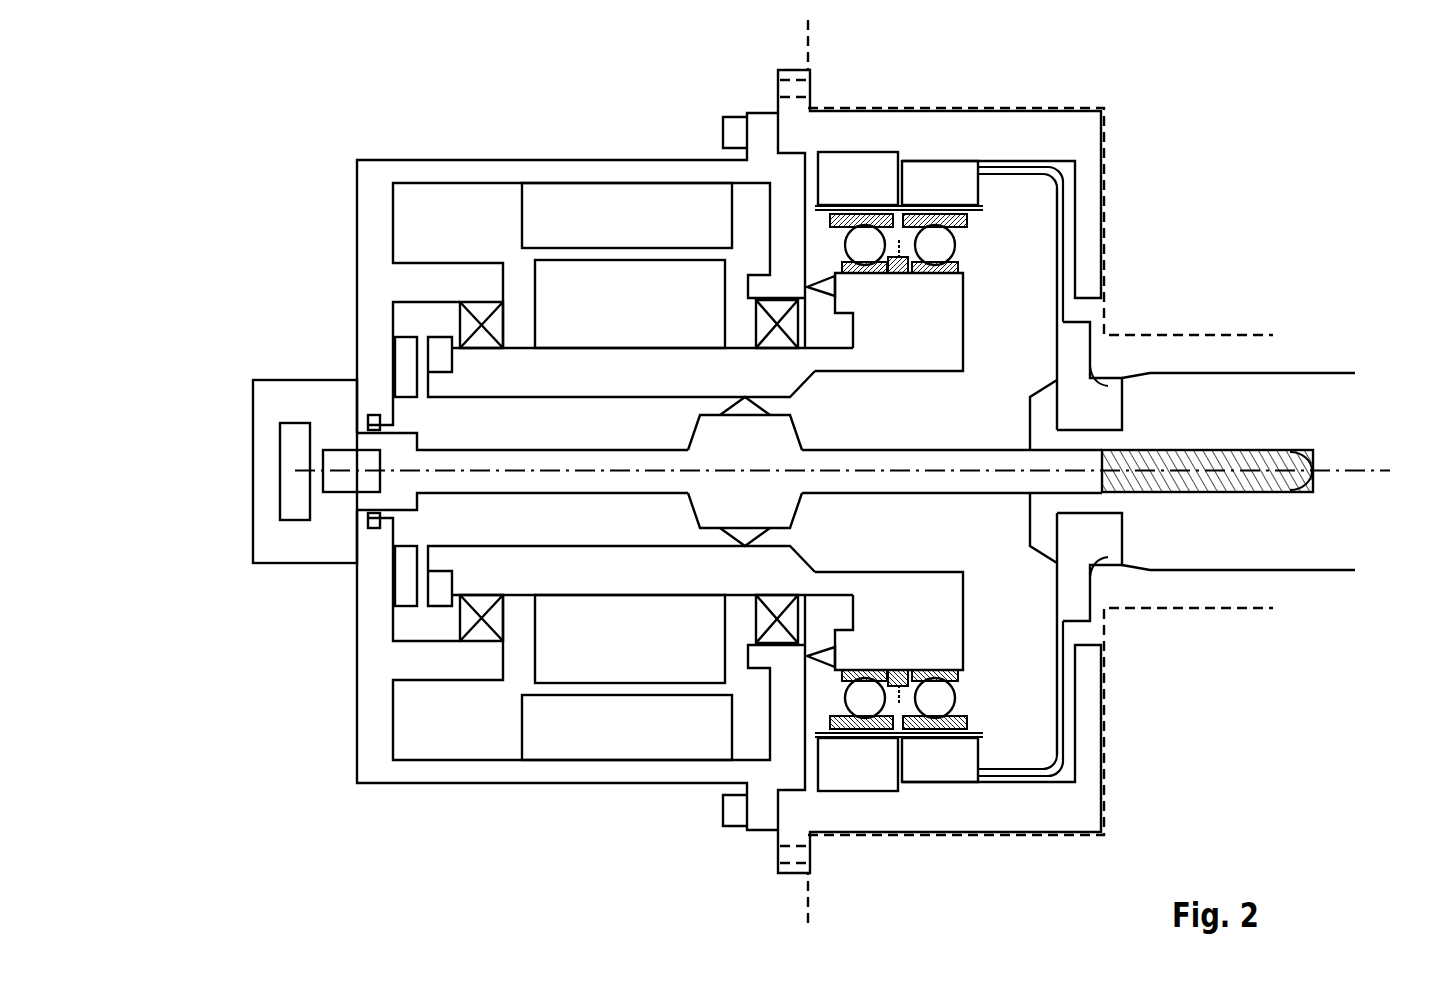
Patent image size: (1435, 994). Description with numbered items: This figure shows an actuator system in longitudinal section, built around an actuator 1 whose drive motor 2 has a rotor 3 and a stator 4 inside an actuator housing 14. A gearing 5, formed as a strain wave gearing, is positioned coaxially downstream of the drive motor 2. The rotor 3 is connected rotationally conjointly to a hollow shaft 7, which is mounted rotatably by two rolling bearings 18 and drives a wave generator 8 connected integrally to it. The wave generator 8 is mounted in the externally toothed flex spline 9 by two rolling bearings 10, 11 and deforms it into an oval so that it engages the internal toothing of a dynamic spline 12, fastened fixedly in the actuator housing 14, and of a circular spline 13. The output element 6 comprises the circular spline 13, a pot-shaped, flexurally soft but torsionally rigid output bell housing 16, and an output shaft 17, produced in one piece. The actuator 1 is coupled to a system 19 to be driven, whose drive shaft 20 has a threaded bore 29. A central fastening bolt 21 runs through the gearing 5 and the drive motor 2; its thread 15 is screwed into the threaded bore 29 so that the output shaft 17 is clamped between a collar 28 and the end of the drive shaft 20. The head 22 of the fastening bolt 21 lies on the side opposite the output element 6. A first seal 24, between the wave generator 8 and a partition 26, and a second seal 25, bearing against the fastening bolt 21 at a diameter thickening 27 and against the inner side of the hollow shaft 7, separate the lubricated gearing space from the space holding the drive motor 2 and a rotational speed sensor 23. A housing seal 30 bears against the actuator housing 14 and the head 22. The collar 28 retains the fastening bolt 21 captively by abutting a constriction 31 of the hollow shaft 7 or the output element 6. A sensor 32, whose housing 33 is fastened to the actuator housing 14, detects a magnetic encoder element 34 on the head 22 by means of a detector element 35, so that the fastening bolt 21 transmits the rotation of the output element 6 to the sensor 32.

The actuator 1 is at (393, 132).
The drive motor 2 is at (625, 772).
The rotor 3 is at (610, 315).
The stator 4 is at (612, 231).
The gearing 5 is at (901, 795).
The output element 6 is at (1016, 693).
The hollow shaft 7 is at (565, 397).
The wave generator 8 is at (905, 335).
The flex spline 9 is at (982, 212).
The rolling bearing 10 is at (963, 250).
The rolling bearing 11 is at (872, 280).
The dynamic spline 12 is at (840, 189).
The circular spline 13 is at (922, 193).
The actuator housing 14 is at (527, 168).
The thread 15 is at (1195, 483).
The output bell housing 16 is at (1060, 218).
The output shaft 17 is at (1085, 385).
The rolling bearings 18 is at (480, 342).
The system to be driven 19 is at (1300, 90).
The drive shaft 20 is at (1308, 382).
The fastening bolt 21 is at (580, 480).
The head 22 is at (428, 513).
The rotational speed sensor 23 is at (412, 408).
The first seal 24 is at (823, 297).
The second seal 25 is at (747, 405).
The partition 26 is at (785, 255).
The diameter thickening 27 is at (720, 433).
The collar 28 is at (1028, 423).
The threaded bore 29 is at (1307, 457).
The housing seal 30 is at (365, 428).
The constriction 31 is at (818, 552).
The sensor 32 is at (228, 413).
The housing 33 is at (253, 545).
The magnetic encoder element 34 is at (336, 492).
The detector element 35 is at (292, 494).